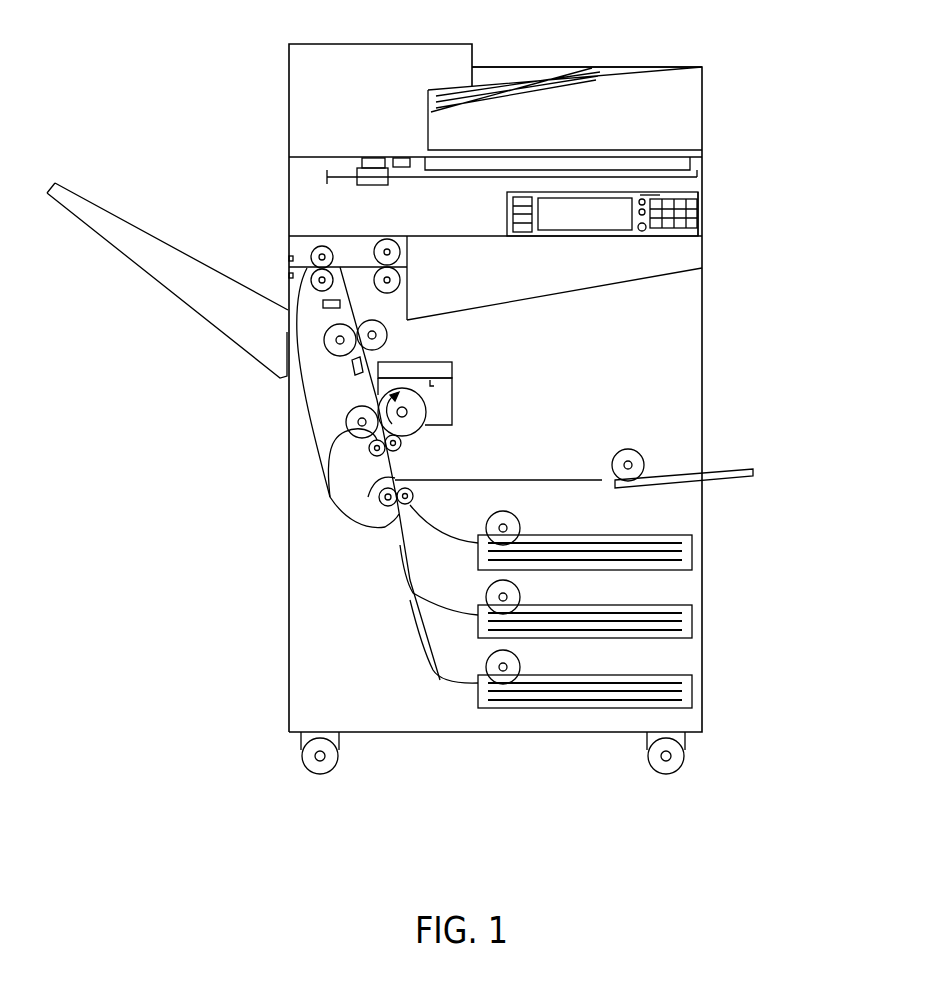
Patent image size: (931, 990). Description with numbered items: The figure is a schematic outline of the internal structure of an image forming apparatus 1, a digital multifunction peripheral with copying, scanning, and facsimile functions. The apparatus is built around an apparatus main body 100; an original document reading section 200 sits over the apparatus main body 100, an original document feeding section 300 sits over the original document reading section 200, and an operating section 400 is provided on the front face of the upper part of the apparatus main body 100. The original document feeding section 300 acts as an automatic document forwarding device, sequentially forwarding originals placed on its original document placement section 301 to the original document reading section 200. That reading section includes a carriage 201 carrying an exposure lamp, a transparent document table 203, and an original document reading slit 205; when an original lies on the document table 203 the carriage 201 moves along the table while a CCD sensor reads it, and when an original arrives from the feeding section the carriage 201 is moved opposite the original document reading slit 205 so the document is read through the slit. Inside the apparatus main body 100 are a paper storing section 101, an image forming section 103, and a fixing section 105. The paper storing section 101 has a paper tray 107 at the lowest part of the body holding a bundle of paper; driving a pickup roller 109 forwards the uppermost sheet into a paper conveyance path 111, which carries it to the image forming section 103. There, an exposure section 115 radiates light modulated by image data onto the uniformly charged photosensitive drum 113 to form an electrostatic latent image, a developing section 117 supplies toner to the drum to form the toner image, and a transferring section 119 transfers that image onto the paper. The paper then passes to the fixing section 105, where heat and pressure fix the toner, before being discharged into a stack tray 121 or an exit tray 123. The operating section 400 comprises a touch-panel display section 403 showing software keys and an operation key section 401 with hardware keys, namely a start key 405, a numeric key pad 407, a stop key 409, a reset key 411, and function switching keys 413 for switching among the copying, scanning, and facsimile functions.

The image forming apparatus 1 is at (218, 45).
The apparatus main body 100 is at (675, 402).
The paper storing section 101 is at (747, 568).
The image forming section 103 is at (345, 393).
The fixing section 105 is at (334, 353).
The paper tray 107 is at (692, 562).
The pickup roller 109 is at (516, 522).
The paper conveyance path 111 is at (368, 505).
The photosensitive drum 113 is at (423, 427).
The exposure section 115 is at (452, 366).
The developing section 117 is at (452, 406).
The transferring section 119 is at (328, 502).
The stack tray 121 is at (170, 292).
The exit tray 123 is at (530, 299).
The original document reading section 200 is at (310, 186).
The carriage 201 is at (373, 187).
The document table 203 is at (697, 165).
The original document reading slit 205 is at (362, 158).
The original document feeding section 300 is at (548, 66).
The original document placement section 301 is at (638, 72).
The operating section 400 is at (718, 213).
The operation key section 401 is at (704, 233).
The display section 403 is at (558, 208).
The start key 405 is at (642, 231).
The numeric key pad 407 is at (662, 229).
The stop key 409 is at (640, 200).
The reset key 411 is at (648, 195).
The function switching keys 413 is at (513, 222).